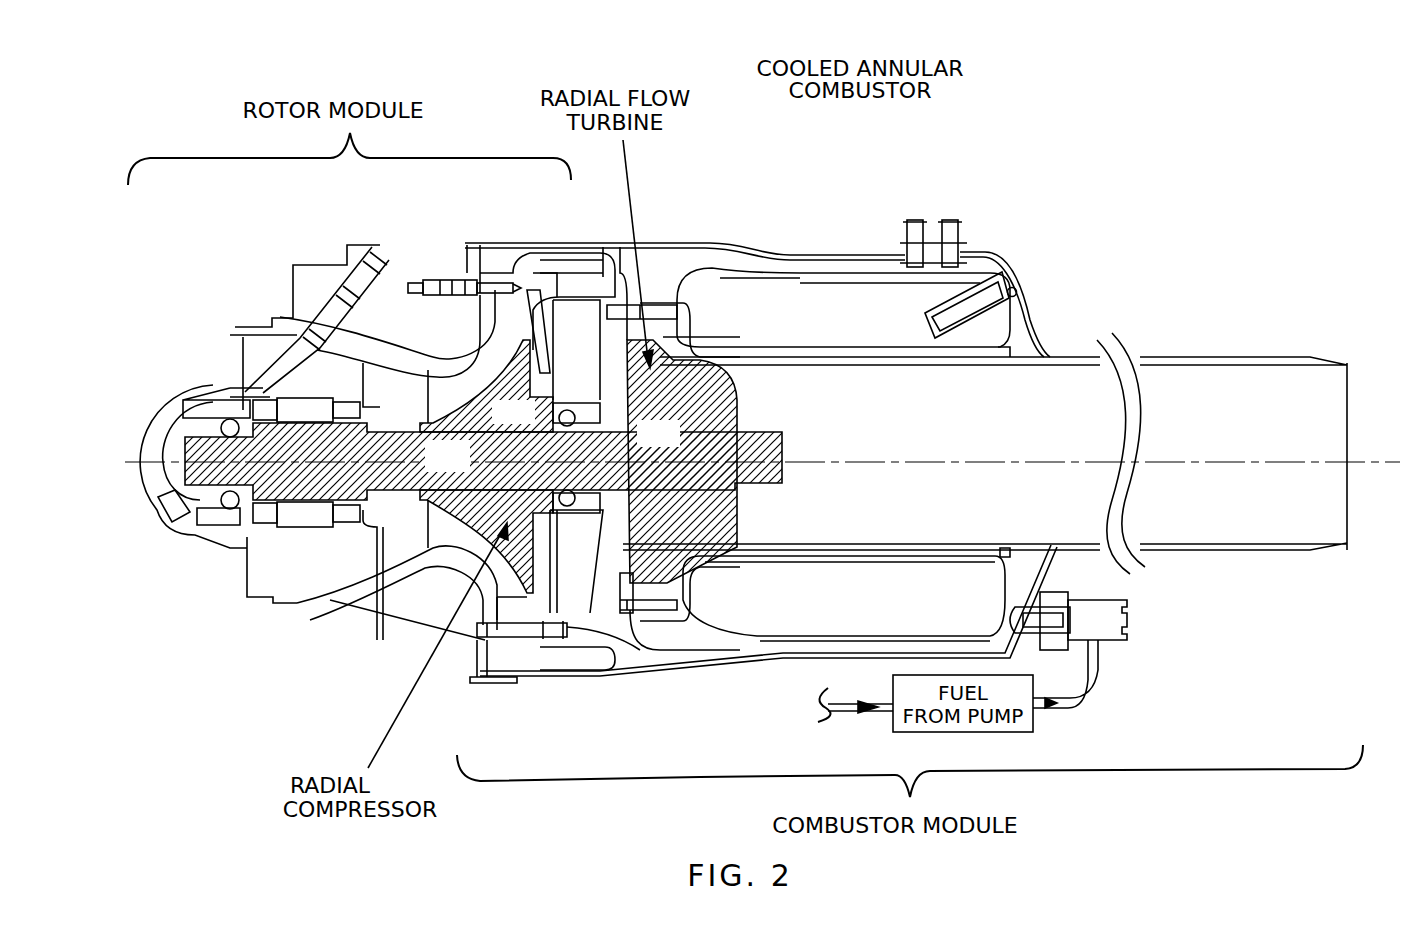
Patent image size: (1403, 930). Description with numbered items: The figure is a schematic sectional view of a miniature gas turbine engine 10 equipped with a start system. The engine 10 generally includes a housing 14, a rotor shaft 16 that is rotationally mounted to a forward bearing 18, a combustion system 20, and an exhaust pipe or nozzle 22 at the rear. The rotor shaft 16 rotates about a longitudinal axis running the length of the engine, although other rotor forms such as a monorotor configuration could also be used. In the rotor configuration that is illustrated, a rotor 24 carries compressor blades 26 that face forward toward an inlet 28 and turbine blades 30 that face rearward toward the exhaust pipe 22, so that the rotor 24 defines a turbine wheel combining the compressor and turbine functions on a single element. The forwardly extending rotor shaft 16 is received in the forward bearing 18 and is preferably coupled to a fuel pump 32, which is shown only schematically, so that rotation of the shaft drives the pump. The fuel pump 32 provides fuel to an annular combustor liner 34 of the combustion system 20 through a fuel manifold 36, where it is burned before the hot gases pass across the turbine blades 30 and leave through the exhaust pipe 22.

The miniature gas turbine engine 10 is at (1179, 243).
The housing 14 is at (722, 242).
The rotor shaft 16 is at (463, 471).
The forward bearing 18 is at (215, 535).
The combustion system 20 is at (815, 312).
The exhaust pipe (nozzle) 22 is at (1218, 355).
The rotor 24 is at (403, 543).
The compressor blades 26 is at (530, 425).
The inlet 28 is at (290, 563).
The turbine blades 30 is at (641, 447).
The fuel pump 32 is at (243, 385).
The annular combustor liner 34 is at (891, 565).
The fuel manifold 36 is at (1047, 593).